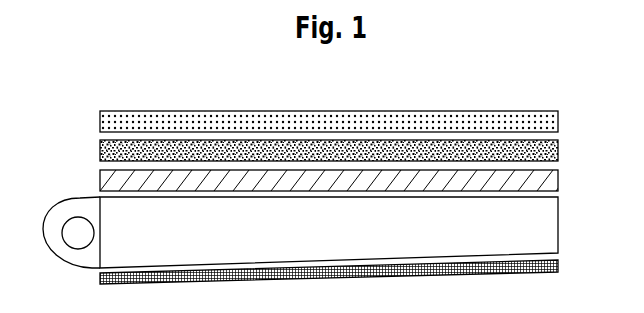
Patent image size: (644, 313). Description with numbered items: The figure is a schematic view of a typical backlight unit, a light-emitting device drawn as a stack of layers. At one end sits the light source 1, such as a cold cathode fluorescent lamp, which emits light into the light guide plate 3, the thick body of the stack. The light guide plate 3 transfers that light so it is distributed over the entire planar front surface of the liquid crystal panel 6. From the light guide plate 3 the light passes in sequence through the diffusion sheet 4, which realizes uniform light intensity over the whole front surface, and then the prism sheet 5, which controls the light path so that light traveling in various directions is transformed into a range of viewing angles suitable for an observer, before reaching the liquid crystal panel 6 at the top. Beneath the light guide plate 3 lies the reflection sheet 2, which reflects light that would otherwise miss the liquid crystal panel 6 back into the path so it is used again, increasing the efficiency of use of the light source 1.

The light source 1 is at (66, 212).
The reflection sheet 2 is at (567, 268).
The light guide plate 3 is at (567, 227).
The diffusion sheet 4 is at (567, 180).
The prism sheet 5 is at (567, 150).
The liquid crystal panel 6 is at (567, 122).